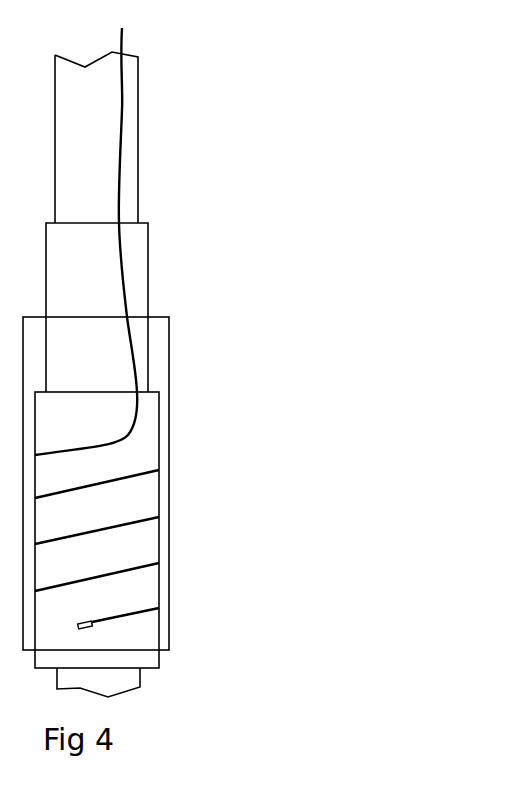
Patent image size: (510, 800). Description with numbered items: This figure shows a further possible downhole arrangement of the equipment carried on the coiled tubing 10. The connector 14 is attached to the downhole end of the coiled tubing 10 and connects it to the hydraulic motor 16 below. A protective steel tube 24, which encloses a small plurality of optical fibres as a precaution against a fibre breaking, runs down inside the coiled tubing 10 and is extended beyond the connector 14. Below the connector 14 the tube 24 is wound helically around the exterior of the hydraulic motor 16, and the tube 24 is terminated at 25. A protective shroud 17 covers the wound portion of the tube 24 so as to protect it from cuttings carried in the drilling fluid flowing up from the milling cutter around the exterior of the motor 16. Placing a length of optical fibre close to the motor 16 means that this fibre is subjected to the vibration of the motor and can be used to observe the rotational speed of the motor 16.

The coiled tubing 10 is at (138, 152).
The connector 14 is at (148, 240).
The hydraulic motor 16 is at (145, 441).
The protective shroud 17 is at (169, 347).
The protective steel tube 24 is at (122, 110).
The termination of the tube 25 is at (92, 626).